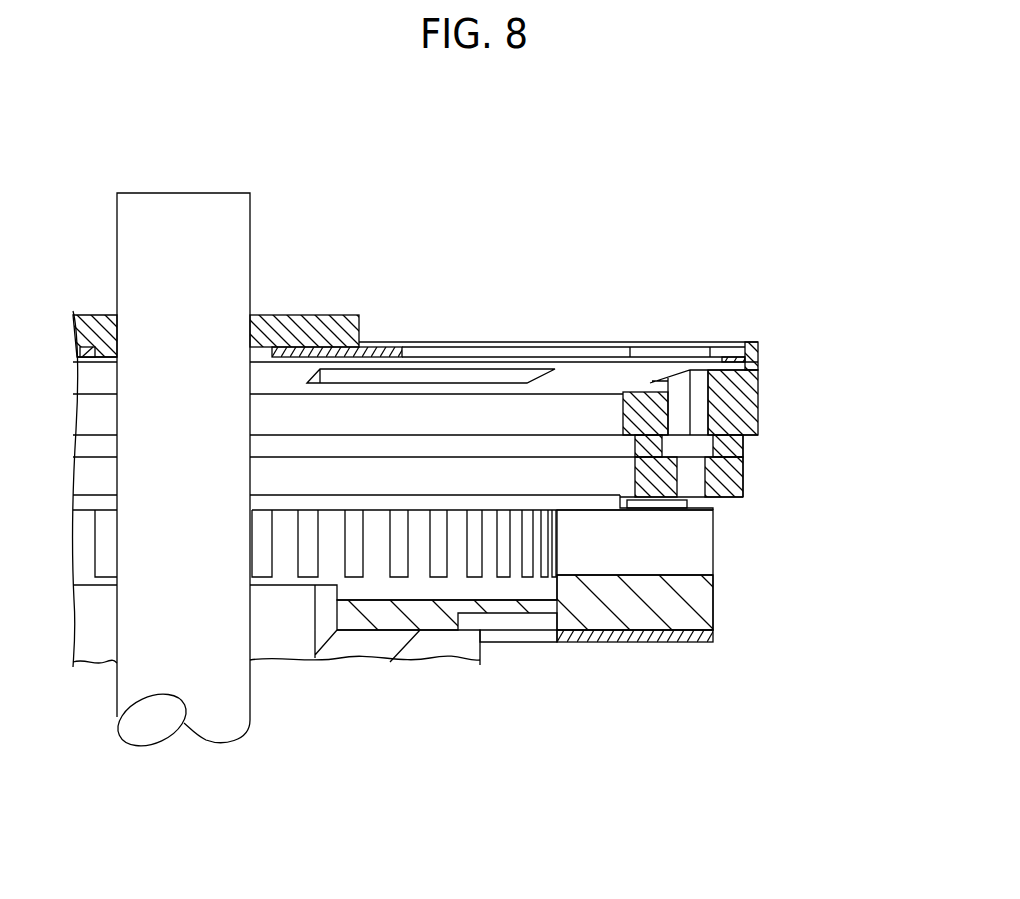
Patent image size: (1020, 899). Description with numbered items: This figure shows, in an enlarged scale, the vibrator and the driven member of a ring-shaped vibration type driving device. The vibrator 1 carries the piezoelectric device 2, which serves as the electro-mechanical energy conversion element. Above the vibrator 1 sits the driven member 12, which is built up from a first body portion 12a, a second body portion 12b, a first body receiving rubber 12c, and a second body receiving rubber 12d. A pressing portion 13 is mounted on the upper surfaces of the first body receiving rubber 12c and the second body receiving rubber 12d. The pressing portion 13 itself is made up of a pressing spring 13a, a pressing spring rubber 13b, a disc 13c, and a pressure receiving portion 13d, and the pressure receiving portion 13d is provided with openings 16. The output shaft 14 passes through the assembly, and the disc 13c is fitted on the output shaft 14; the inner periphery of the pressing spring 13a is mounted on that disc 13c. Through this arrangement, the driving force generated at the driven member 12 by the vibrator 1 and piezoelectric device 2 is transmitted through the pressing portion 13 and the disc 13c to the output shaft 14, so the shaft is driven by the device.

The vibrator 1 is at (620, 613).
The piezoelectric device 2 is at (575, 640).
The driven member 12 is at (852, 402).
The first body portion 12a is at (725, 485).
The second body portion 12b is at (718, 503).
The first body receiving rubber 12c is at (735, 442).
The second body receiving rubber 12d is at (647, 440).
The pressing portion 13 is at (852, 192).
The pressing spring 13a is at (382, 355).
The pressing spring rubber 13b is at (735, 358).
The disc 13c is at (322, 328).
The pressure receiving portion 13d is at (750, 372).
The output shaft 14 is at (237, 223).
The openings 16 is at (687, 400).